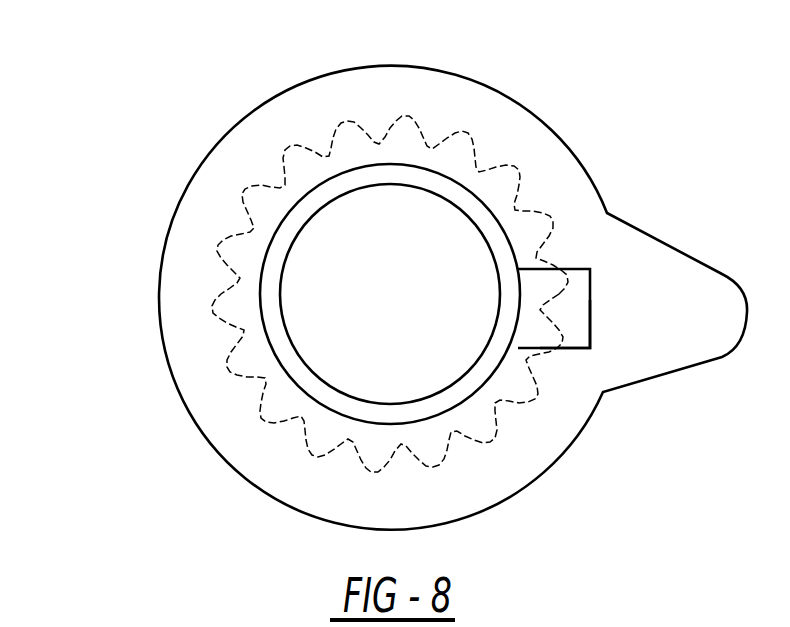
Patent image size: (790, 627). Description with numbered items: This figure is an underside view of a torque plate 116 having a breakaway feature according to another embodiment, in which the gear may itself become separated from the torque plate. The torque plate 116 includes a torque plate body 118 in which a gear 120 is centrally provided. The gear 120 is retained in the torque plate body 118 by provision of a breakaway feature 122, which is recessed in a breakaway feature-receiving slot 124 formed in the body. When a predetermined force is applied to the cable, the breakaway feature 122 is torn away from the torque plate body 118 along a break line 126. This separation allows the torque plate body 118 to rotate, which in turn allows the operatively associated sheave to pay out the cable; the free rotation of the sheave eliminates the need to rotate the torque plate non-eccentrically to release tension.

The torque plate 116 is at (149, 222).
The torque plate body 118 is at (228, 160).
The gear 120 is at (481, 207).
The breakaway feature 122 is at (575, 328).
The breakaway feature-receiving slot 124 is at (592, 283).
The break line 126 is at (522, 298).